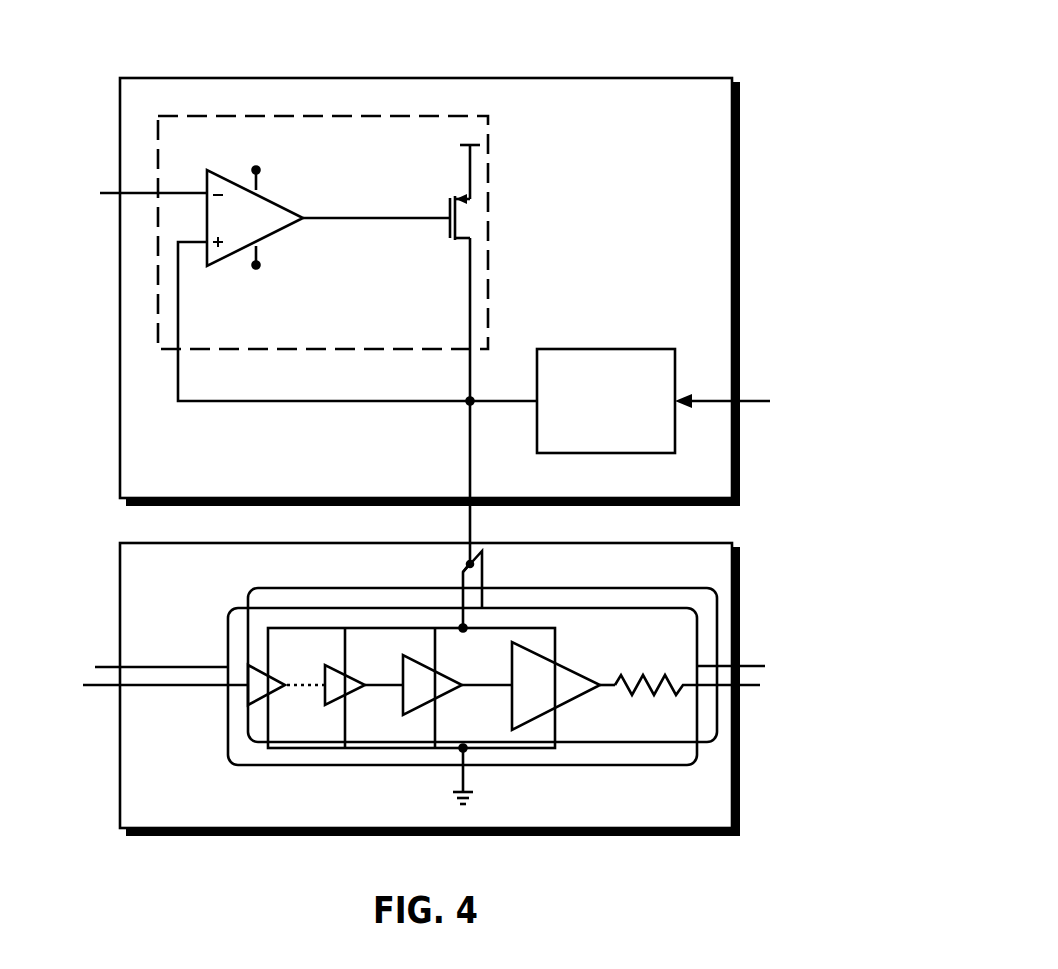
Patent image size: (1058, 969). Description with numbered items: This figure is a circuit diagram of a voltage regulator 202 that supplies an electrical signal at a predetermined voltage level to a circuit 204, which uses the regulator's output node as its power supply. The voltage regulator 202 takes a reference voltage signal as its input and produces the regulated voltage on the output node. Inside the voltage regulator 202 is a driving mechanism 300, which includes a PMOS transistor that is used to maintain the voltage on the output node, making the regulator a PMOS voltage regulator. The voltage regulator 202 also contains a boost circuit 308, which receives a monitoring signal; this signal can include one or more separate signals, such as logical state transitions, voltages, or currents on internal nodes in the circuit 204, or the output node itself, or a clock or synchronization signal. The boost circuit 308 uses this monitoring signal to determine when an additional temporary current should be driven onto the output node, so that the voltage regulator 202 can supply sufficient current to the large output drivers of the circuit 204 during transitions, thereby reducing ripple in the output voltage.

The driving mechanism 300 is at (296, 107).
The voltage regulator 202 is at (476, 283).
The boost circuit 308 is at (606, 401).
The circuit 204 is at (425, 689).